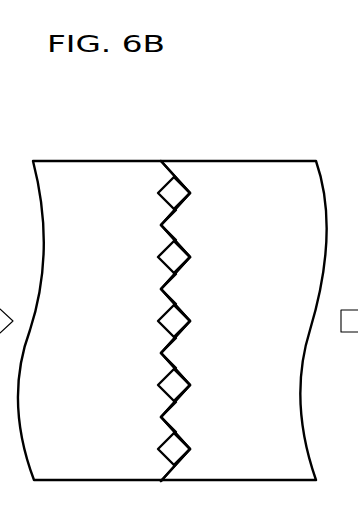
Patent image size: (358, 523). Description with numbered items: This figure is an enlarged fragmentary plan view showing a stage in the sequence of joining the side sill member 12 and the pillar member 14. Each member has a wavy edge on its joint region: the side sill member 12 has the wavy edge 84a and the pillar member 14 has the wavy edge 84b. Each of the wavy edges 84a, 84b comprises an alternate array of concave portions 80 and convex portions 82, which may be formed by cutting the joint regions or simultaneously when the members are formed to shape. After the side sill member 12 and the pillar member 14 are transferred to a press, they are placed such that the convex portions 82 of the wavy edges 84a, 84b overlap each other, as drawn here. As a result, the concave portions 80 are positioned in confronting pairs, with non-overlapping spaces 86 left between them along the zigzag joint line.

The side sill member 12 is at (78, 169).
The pillar member 14 is at (271, 169).
The concave portion 80 is at (183, 192).
The convex portion 82 is at (162, 222).
The wavy edge 84a is at (147, 158).
The wavy edge 84b is at (180, 158).
The non-overlapping space 86 is at (169, 184).